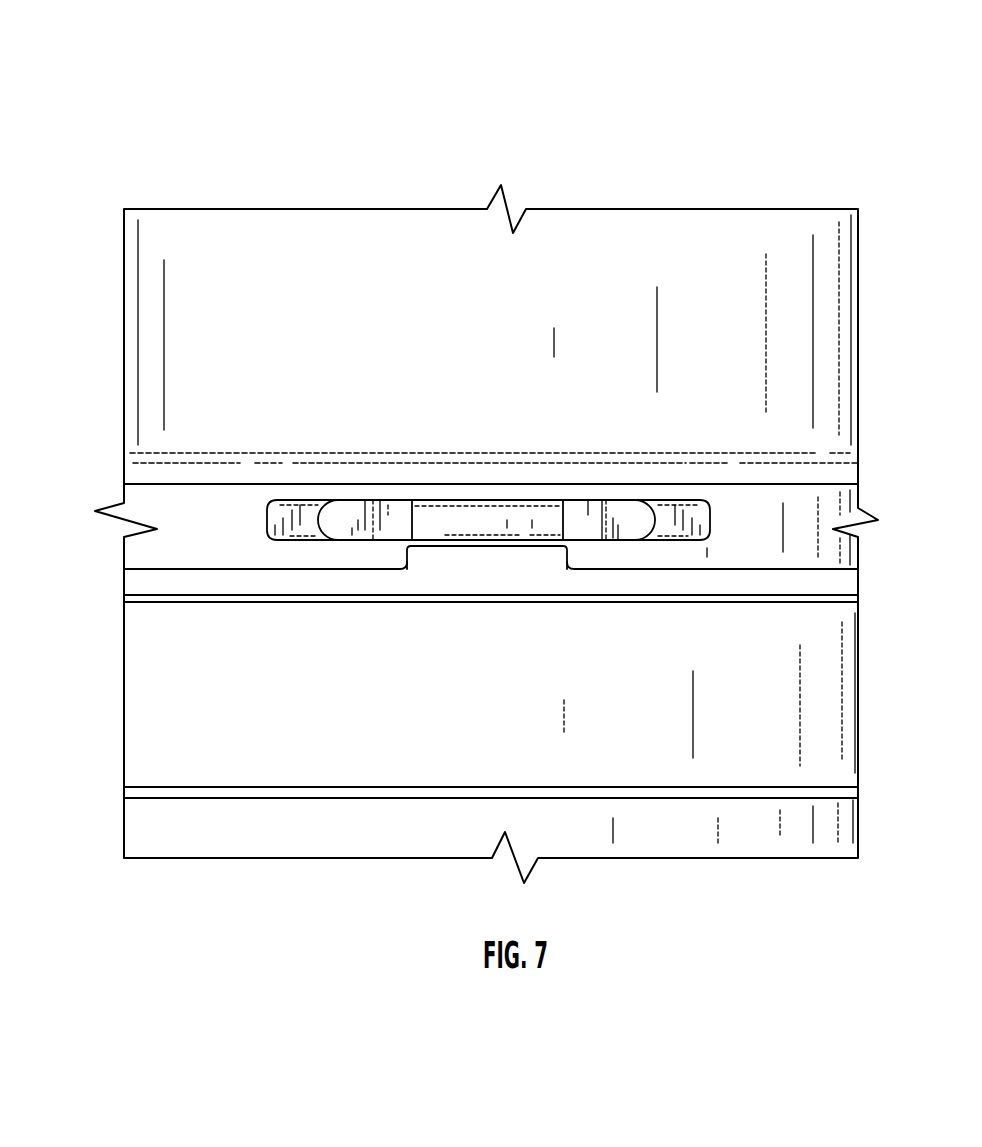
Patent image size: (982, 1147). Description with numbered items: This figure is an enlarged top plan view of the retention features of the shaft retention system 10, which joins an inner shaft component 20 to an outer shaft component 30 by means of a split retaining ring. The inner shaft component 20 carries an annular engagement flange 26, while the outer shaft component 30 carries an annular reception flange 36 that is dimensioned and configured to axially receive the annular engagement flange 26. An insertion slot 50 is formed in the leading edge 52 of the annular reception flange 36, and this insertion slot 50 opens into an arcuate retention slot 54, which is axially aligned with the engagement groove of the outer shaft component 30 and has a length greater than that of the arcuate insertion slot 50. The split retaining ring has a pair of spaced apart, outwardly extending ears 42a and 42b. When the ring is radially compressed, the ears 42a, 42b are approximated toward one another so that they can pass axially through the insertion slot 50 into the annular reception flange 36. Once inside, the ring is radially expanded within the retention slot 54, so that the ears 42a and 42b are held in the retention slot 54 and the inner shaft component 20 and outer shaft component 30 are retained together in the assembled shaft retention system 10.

The shaft retention system 10 is at (674, 99).
The inner shaft component 20 is at (155, 698).
The annular engagement flange 26 is at (137, 584).
The outer shaft component 30 is at (133, 301).
The annular reception flange 36 is at (145, 551).
The ear 42a is at (347, 513).
The ear 42b is at (612, 525).
The insertion slot 50 is at (410, 558).
The leading edge 52 is at (337, 570).
The retention slot 54 is at (468, 508).